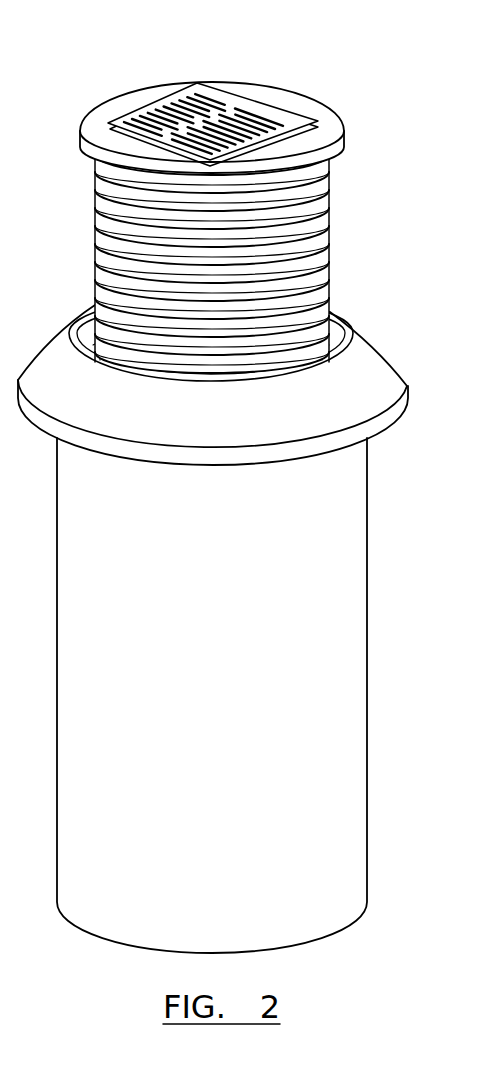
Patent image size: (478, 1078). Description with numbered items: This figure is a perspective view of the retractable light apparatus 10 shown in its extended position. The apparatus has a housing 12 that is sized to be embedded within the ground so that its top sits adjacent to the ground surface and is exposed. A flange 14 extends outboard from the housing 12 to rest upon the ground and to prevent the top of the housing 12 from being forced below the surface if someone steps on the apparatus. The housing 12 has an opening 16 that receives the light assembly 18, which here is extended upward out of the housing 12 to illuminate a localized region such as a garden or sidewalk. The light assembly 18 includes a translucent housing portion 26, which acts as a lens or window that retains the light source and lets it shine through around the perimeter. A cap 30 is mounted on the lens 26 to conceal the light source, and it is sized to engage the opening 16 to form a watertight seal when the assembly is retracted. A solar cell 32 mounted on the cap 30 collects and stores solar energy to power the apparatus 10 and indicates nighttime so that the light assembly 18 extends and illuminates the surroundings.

The retractable light apparatus 10 is at (334, 77).
The housing 12 is at (374, 577).
The flange 14 is at (372, 368).
The opening 16 is at (333, 325).
The light assembly 18 is at (211, 263).
The translucent housing portion 26 is at (95, 213).
The cap 30 is at (346, 134).
The solar cell 32 is at (189, 111).